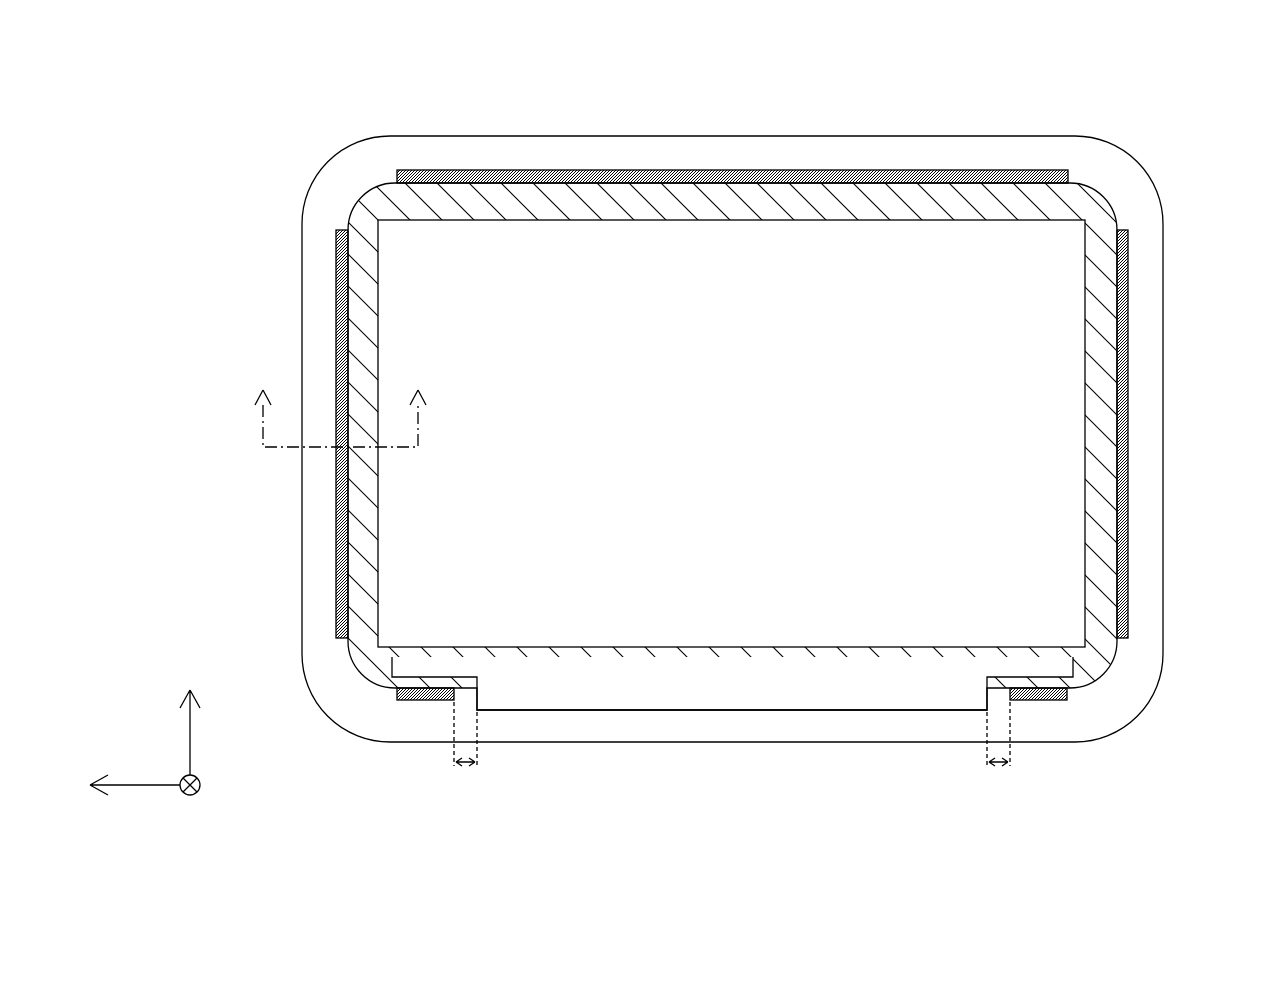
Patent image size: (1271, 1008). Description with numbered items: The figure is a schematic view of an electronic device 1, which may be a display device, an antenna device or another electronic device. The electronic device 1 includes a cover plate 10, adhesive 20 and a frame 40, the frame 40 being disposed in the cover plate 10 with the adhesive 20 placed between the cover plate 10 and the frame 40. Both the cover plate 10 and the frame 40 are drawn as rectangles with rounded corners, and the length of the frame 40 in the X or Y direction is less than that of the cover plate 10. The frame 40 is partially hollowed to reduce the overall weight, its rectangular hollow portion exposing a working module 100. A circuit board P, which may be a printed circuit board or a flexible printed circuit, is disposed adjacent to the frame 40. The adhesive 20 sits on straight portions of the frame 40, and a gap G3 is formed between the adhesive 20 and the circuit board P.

The electronic device 1 is at (288, 122).
The cover plate 10 is at (323, 508).
The adhesive 20 is at (630, 178).
The frame 40 is at (1100, 432).
The working module 100 is at (1010, 522).
The circuit board P is at (860, 686).
The gap G3 is at (732, 750).